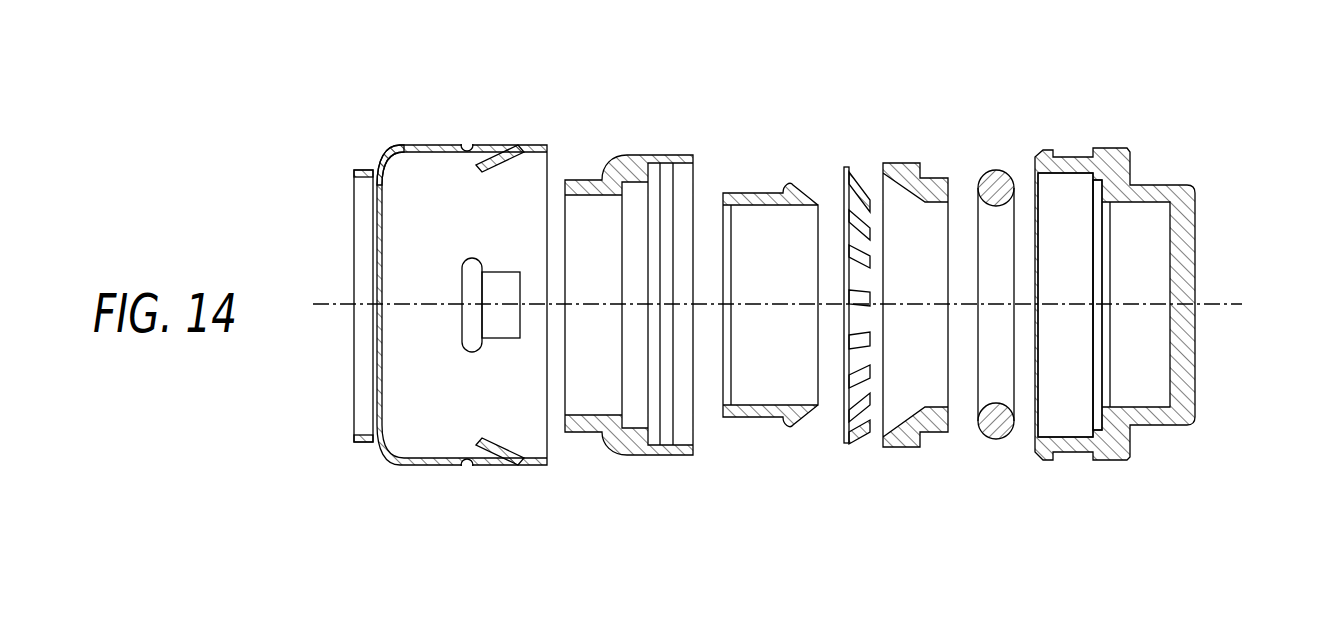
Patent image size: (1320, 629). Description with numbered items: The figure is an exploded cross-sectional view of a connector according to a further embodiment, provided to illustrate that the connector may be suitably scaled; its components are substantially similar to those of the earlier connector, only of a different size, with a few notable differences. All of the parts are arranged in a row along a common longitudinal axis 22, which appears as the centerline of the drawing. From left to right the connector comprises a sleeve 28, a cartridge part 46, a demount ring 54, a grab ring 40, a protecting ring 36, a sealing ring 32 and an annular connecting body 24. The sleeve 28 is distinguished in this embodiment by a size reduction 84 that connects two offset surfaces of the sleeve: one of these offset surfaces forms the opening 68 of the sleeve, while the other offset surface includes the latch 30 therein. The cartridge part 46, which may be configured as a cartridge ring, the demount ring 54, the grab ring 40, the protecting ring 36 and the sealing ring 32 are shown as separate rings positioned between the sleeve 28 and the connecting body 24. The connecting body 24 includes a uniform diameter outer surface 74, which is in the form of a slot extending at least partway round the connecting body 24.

The longitudinal axis 22 is at (1237, 302).
The connecting body 24 is at (1172, 263).
The sleeve 28 is at (447, 232).
The latch 30 is at (493, 162).
The sealing ring 32 is at (997, 169).
The protecting ring 36 is at (932, 165).
The grab ring 40 is at (855, 165).
The cartridge part 46 is at (637, 140).
The demount ring 54 is at (768, 185).
The opening 68 is at (352, 195).
The uniform diameter outer surface 74 is at (1070, 157).
The size reduction 84 is at (388, 152).